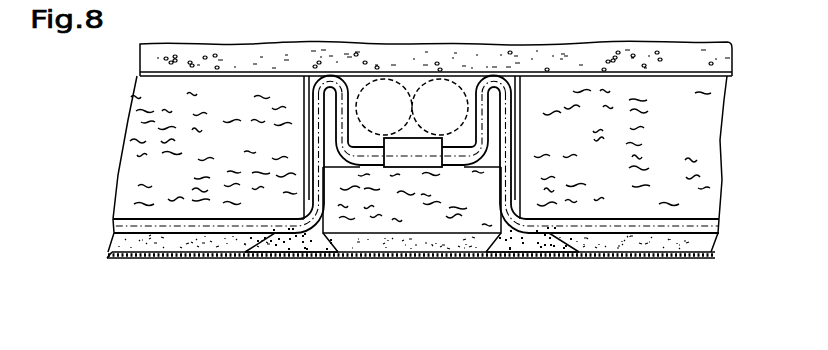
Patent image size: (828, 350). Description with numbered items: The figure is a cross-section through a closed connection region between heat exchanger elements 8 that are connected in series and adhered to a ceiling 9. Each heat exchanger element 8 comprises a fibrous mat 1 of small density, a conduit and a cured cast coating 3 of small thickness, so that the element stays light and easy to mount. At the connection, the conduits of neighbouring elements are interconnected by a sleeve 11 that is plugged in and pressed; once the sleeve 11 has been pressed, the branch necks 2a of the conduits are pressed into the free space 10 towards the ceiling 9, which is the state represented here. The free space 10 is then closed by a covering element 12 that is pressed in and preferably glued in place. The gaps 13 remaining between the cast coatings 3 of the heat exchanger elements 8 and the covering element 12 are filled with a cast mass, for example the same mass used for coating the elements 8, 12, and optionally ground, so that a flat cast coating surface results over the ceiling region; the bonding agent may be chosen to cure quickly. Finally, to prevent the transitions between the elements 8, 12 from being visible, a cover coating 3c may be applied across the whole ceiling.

The fibrous mat 1 is at (449, 227).
The branch necks 2a is at (349, 131).
The cast coating 3 is at (212, 246).
The cover coating 3c is at (685, 266).
The heat exchanger element 8 is at (250, 265).
The ceiling 9 is at (748, 51).
The free space 10 is at (416, 90).
The sleeve 11 is at (413, 83).
The covering element 12 is at (384, 268).
The gaps 13 is at (312, 264).